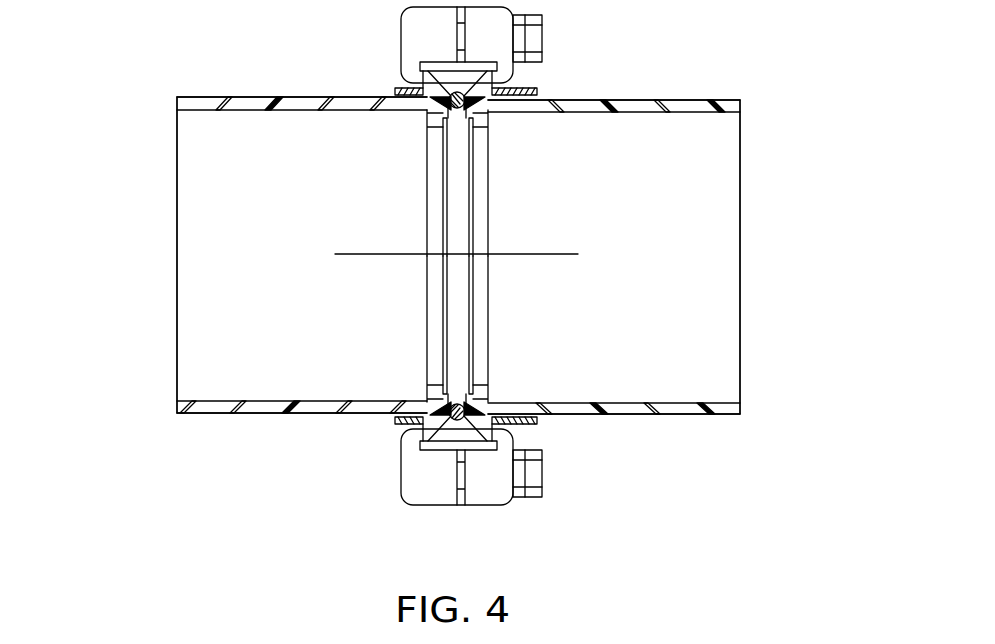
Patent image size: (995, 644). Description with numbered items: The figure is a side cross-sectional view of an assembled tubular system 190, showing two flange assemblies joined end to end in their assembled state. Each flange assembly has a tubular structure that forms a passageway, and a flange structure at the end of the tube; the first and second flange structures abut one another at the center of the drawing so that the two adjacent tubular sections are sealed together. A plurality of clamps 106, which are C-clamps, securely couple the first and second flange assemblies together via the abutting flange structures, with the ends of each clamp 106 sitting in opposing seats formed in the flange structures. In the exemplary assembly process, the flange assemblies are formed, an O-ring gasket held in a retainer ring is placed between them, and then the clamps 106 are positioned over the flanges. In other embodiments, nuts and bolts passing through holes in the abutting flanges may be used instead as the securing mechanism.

The assembled tubular system 190 is at (130, 290).
The clamp 106 is at (520, 32).